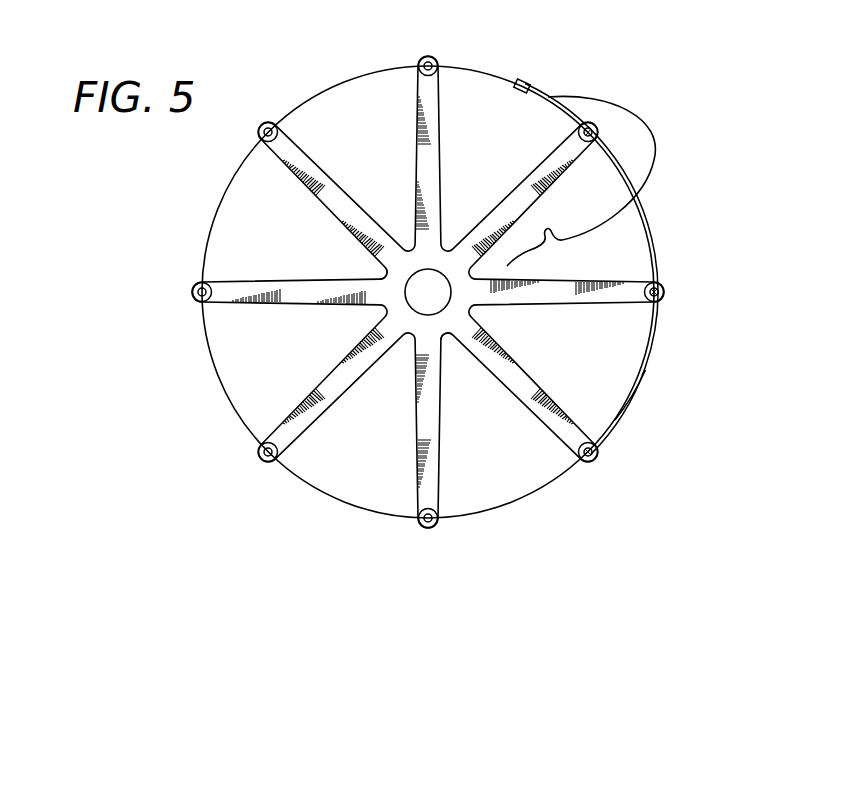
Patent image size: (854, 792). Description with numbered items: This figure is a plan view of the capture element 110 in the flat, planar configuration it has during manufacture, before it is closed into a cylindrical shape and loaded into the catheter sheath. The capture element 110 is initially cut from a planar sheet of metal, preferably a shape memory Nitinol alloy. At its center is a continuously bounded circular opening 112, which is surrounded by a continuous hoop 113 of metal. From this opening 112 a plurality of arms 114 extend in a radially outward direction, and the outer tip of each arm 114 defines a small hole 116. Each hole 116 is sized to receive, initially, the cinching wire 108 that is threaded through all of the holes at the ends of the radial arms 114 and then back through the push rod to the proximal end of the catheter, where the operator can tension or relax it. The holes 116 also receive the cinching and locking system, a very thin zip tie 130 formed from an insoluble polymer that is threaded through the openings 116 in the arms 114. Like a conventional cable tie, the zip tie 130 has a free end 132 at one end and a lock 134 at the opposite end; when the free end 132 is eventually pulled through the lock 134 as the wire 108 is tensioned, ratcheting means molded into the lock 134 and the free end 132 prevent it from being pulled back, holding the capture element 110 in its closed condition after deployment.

The cinching wire 108 is at (577, 238).
The capture element 110 is at (340, 58).
The circular opening 112 is at (433, 288).
The continuous hoop 113 is at (397, 279).
The arm 114 is at (547, 163).
The hole 116 is at (433, 58).
The zip tie 130 is at (553, 92).
The free end 132 is at (624, 407).
The lock 134 is at (523, 81).